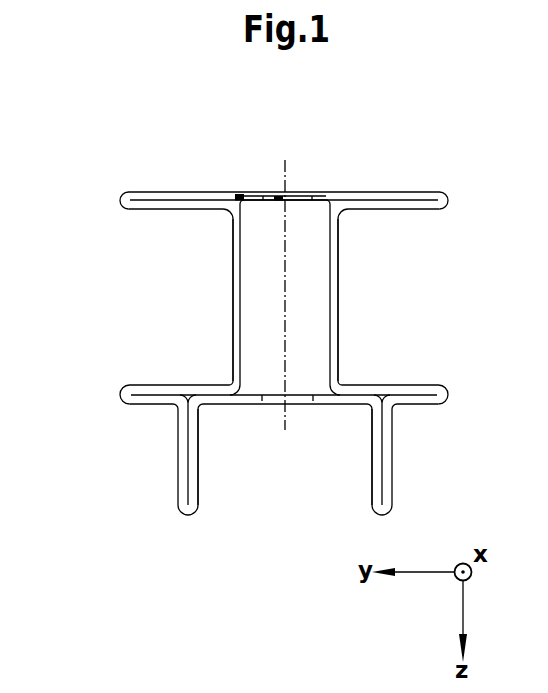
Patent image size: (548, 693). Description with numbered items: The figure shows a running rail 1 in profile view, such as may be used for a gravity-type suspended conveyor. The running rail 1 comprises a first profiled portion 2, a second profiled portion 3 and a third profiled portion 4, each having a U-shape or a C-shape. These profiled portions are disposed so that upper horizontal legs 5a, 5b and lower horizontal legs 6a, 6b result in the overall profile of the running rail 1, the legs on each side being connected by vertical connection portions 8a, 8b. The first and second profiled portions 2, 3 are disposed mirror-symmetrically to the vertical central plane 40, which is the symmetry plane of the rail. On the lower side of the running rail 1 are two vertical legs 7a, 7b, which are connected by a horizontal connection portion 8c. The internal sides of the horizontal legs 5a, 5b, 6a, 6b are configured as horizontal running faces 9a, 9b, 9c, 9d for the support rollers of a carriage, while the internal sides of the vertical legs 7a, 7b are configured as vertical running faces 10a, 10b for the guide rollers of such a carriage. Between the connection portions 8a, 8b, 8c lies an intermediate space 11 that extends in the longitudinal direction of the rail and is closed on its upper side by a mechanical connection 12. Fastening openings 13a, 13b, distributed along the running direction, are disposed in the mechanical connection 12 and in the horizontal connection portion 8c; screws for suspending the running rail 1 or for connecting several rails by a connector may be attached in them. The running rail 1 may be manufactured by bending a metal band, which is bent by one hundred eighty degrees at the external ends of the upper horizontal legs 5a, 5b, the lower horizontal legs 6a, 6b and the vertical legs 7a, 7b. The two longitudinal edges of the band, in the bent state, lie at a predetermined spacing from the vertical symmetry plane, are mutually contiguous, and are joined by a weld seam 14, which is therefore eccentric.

The running rail 1 is at (127, 95).
The first profiled portion 2 is at (424, 278).
The second profiled portion 3 is at (118, 266).
The third profiled portion 4 is at (250, 545).
The upper horizontal leg 5a is at (405, 194).
The upper horizontal leg 5b is at (180, 192).
The lower horizontal leg 6a is at (410, 396).
The lower horizontal leg 6b is at (153, 395).
The vertical leg 7a is at (382, 449).
The vertical leg 7b is at (187, 477).
The vertical connection portion 8a is at (338, 272).
The vertical connection portion 8b is at (233, 289).
The horizontal connection portion 8c is at (248, 395).
The horizontal running face 9a is at (394, 210).
The horizontal running face 9b is at (390, 384).
The horizontal running face 9c is at (172, 210).
The horizontal running face 9d is at (165, 385).
The vertical running face 10a is at (373, 477).
The vertical running face 10b is at (196, 460).
The intermediate space 11 is at (314, 200).
The mechanical connection 12 is at (333, 194).
The fastening opening 13a is at (279, 198).
The fastening opening 13b is at (277, 400).
The weld seam 14 is at (234, 196).
The vertical central plane 40 is at (291, 170).